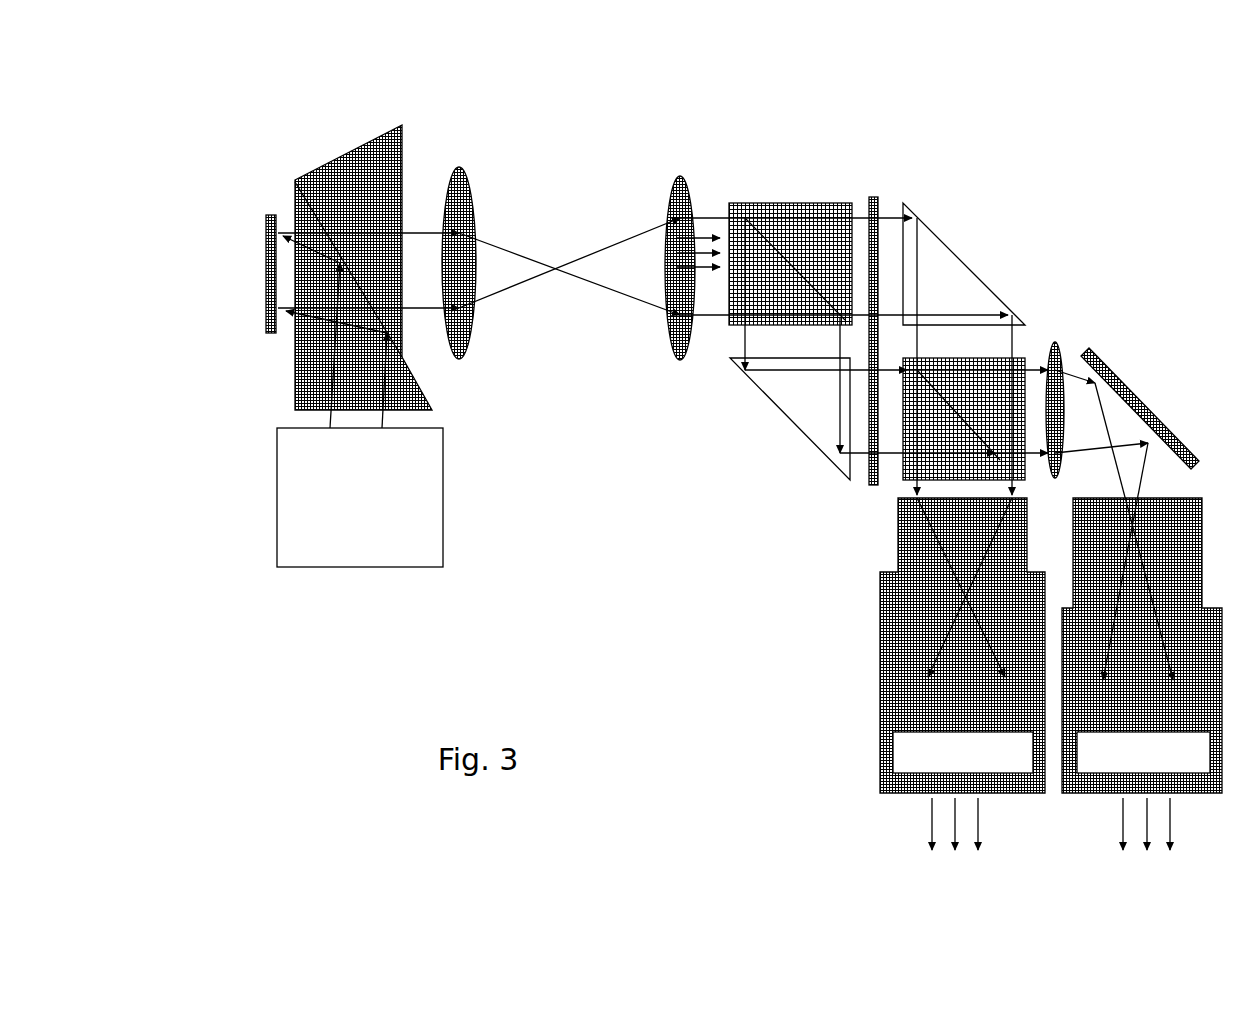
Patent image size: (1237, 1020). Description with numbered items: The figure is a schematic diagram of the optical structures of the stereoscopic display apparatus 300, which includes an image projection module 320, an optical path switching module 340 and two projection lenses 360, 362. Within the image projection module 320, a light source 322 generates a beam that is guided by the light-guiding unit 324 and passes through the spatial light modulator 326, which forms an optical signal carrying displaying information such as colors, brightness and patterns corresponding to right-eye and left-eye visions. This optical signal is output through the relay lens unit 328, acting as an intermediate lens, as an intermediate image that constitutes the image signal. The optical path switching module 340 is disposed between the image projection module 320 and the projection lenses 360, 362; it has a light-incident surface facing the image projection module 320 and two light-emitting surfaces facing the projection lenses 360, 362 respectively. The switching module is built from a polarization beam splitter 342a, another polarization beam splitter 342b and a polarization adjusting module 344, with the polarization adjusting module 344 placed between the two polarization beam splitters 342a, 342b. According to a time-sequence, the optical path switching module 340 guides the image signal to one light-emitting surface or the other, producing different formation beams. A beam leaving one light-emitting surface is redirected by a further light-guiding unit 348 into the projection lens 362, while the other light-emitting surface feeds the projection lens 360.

The stereoscopic display apparatus 300 is at (713, 113).
The image projection module 320 is at (278, 190).
The light source 322 is at (373, 567).
The light-guiding unit 324 is at (295, 348).
The spatial light modulator 326 is at (266, 295).
The relay lens unit 328 is at (702, 168).
The optical path switching module 340 is at (943, 197).
The polarization beam splitter 342a is at (793, 203).
The polarization beam splitter 342b is at (1026, 352).
The polarization adjusting module 344 is at (873, 197).
The light-guiding unit 348 is at (1103, 367).
The projection lens 360 is at (1142, 616).
The projection lens 362 is at (962, 674).